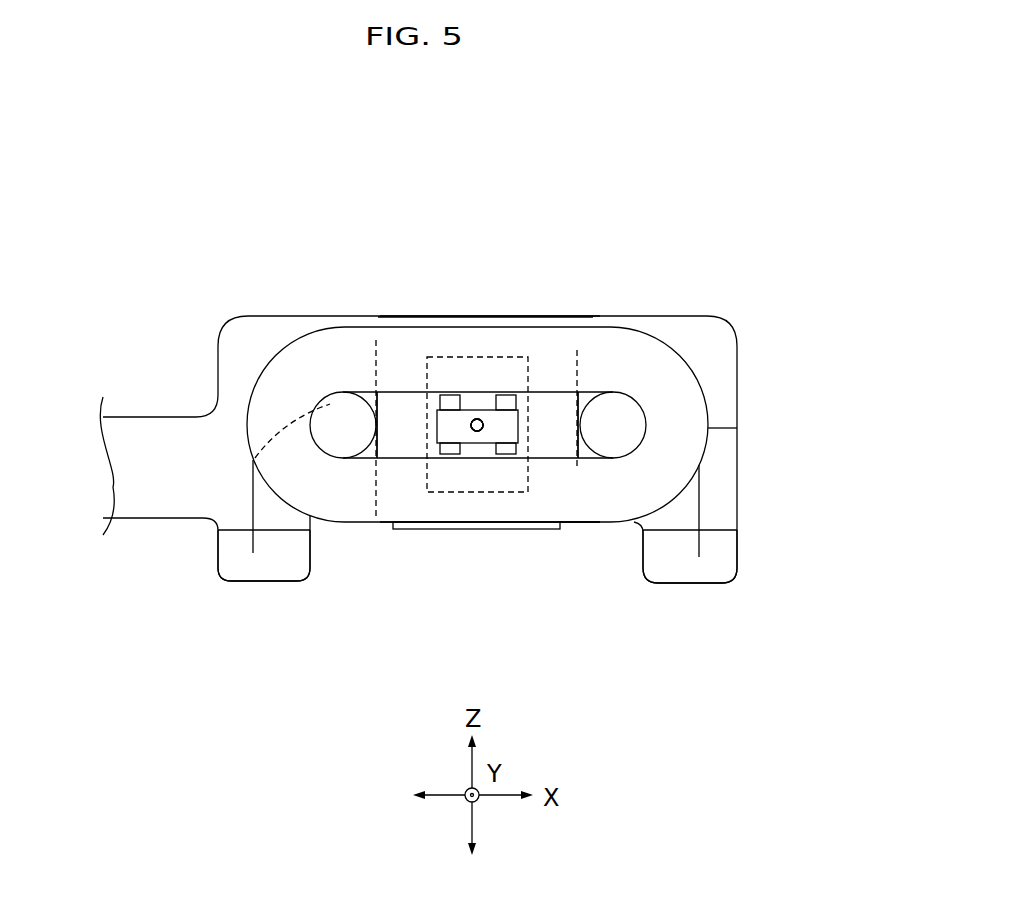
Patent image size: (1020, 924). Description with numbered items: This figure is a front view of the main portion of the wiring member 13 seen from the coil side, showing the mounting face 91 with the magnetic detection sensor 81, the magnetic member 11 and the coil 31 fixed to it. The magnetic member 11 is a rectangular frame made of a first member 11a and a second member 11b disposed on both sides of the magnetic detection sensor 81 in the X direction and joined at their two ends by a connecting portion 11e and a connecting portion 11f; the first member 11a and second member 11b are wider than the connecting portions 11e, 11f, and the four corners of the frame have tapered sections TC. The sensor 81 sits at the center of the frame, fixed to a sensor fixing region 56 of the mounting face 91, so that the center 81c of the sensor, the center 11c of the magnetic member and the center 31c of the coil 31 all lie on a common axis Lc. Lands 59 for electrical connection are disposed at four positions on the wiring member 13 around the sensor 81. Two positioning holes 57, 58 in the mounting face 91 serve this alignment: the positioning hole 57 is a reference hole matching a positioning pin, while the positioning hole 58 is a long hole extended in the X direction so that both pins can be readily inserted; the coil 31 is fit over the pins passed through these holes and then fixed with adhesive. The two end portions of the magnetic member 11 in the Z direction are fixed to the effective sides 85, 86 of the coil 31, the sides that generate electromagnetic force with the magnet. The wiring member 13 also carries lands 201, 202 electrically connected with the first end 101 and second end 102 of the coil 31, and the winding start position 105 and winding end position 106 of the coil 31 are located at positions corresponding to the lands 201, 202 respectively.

The wiring member 13 is at (262, 258).
The mounting face 91 is at (345, 285).
The magnetic member 11 is at (407, 433).
The first member 11a is at (392, 433).
The second member 11b is at (548, 438).
The connecting portion 11e is at (438, 317).
The connecting portion 11f is at (487, 528).
The effective side 85 is at (422, 317).
The effective side 86 is at (447, 529).
The positioning hole 57 is at (343, 427).
The positioning hole 58 is at (613, 427).
The magnetic detection sensor 81 is at (465, 437).
The lands 59 is at (450, 396).
The sensor fixing region 56 is at (477, 419).
The center of the magnetic detection sensor 81c is at (477, 425).
The center of the magnetic member 11c is at (477, 425).
The center of the coil 31c is at (477, 425).
The axis Lc is at (477, 425).
The coil 31 is at (593, 508).
The tapered sections TC is at (376, 340).
The winding start position 105 is at (282, 423).
The first end 101 is at (253, 538).
The second end 102 is at (699, 540).
The winding end position 106 is at (737, 428).
The land 201 is at (260, 573).
The land 202 is at (700, 575).